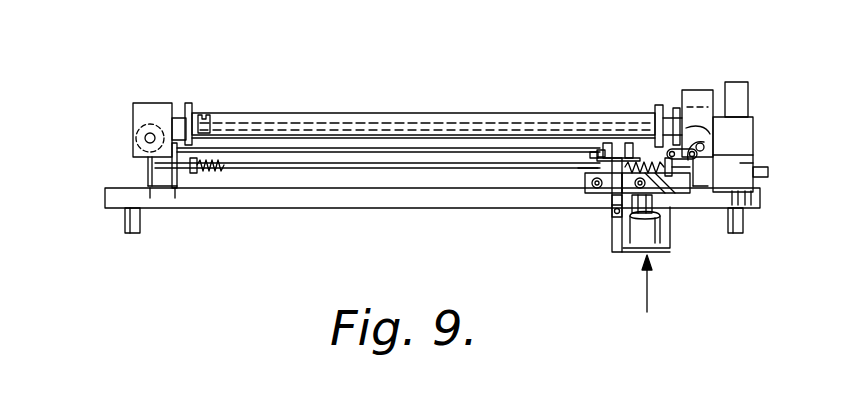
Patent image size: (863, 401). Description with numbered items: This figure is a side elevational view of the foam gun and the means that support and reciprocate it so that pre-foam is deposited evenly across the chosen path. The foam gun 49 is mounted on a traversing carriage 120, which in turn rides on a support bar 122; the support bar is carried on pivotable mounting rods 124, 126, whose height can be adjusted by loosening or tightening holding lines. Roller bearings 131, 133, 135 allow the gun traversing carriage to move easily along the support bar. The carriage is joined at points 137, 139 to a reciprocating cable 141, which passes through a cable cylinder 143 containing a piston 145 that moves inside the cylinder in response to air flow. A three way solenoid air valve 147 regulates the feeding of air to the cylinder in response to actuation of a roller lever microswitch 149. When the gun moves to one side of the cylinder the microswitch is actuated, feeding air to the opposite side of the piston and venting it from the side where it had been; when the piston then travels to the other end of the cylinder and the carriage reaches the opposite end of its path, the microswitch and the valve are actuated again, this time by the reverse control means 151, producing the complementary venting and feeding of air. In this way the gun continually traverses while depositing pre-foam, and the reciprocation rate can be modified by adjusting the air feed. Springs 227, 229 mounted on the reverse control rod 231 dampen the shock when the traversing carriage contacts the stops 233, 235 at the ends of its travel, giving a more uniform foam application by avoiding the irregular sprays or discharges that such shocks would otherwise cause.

The foam gun 49 is at (647, 312).
The traversing carriage 120 is at (660, 247).
The support bar 122 is at (392, 194).
The pivotable mounting rod 124 is at (748, 220).
The pivotable mounting rod 126 is at (128, 233).
The roller bearing 131 is at (585, 178).
The roller bearing 133 is at (600, 196).
The roller bearing 135 is at (610, 212).
The carriage-to-cable joint 137 is at (605, 147).
The carriage-to-cable joint 139 is at (634, 142).
The reciprocating cable 141 is at (398, 148).
The cable cylinder 143 is at (302, 82).
The piston 145 is at (205, 112).
The three way solenoid air valve 147 is at (745, 130).
The roller lever microswitch 149 is at (672, 123).
The reverse control means 151 is at (578, 168).
The spring 227 is at (226, 177).
The spring 229 is at (670, 200).
The reverse control rod 231 is at (333, 168).
The stop 233 is at (197, 177).
The stop 235 is at (683, 195).